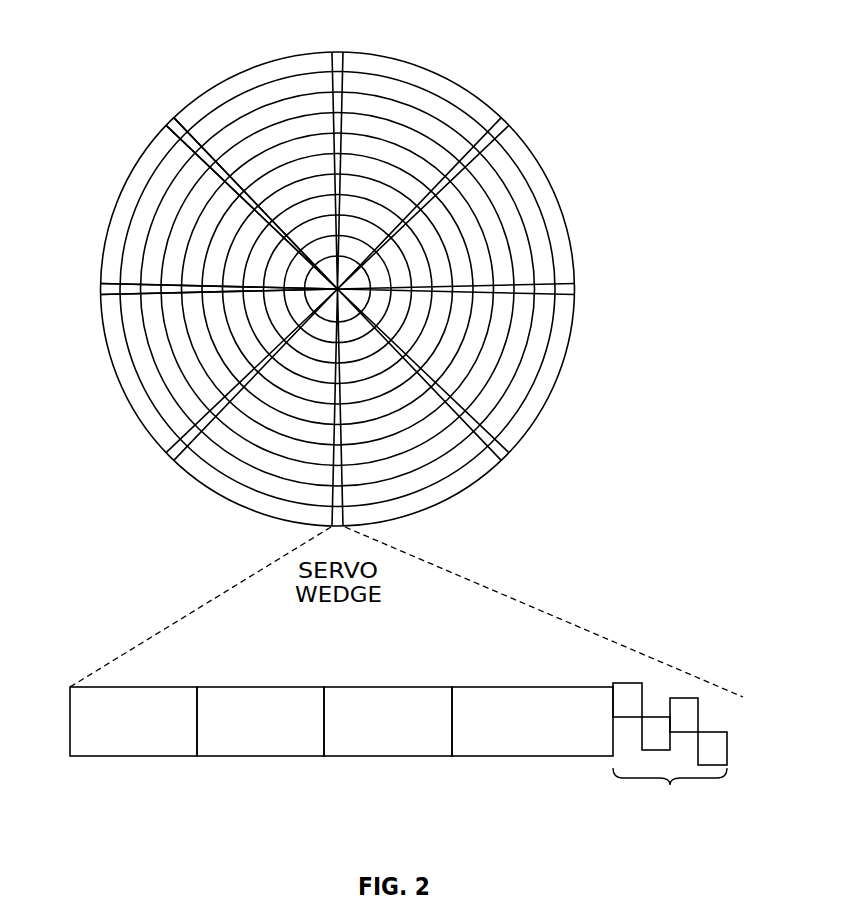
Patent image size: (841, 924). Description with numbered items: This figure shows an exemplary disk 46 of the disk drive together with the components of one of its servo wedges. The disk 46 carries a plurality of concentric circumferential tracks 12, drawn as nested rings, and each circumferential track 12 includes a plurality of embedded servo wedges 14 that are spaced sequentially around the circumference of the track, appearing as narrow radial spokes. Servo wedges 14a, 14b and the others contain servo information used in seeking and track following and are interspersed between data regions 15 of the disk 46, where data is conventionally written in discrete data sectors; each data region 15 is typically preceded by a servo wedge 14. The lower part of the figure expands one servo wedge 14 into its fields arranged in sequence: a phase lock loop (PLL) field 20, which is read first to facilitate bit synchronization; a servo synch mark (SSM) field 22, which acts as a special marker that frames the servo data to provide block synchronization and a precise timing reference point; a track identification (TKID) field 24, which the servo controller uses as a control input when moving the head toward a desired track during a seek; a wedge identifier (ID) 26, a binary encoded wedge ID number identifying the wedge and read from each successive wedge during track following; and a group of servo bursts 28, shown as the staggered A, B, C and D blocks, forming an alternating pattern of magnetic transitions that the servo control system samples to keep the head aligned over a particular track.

The disk 46 is at (187, 31).
The concentric circumferential track 12 is at (136, 196).
The servo wedge 14 is at (337, 54).
The servo wedge 14a is at (172, 127).
The servo wedge 14b is at (105, 288).
The data region 15 is at (416, 74).
The phase lock loop (PLL) field 20 is at (90, 758).
The servo synch mark (SSM) field 22 is at (218, 758).
The track identification (TKID) field 24 is at (345, 758).
The wedge identifier (ID) 26 is at (477, 758).
The servo bursts 28 is at (619, 676).